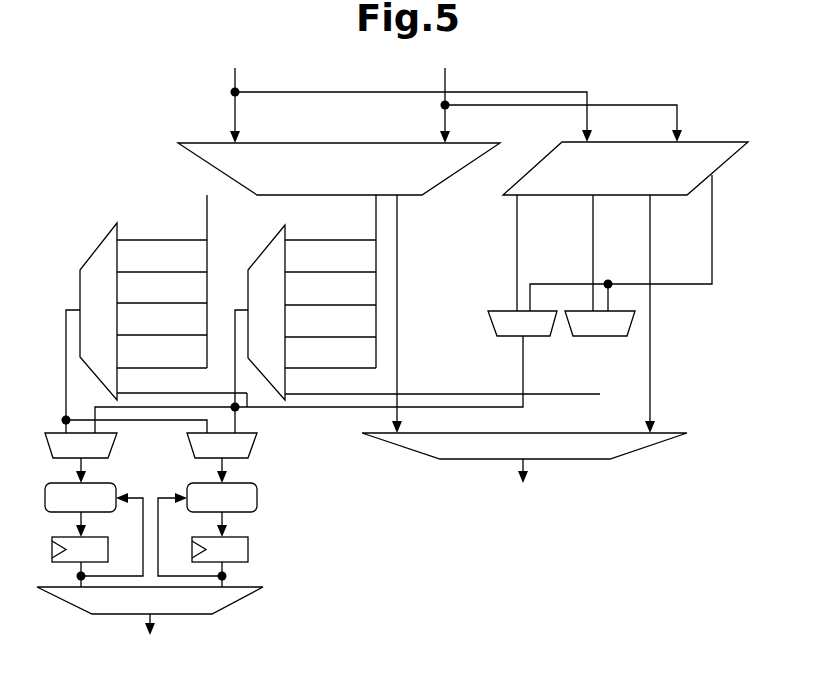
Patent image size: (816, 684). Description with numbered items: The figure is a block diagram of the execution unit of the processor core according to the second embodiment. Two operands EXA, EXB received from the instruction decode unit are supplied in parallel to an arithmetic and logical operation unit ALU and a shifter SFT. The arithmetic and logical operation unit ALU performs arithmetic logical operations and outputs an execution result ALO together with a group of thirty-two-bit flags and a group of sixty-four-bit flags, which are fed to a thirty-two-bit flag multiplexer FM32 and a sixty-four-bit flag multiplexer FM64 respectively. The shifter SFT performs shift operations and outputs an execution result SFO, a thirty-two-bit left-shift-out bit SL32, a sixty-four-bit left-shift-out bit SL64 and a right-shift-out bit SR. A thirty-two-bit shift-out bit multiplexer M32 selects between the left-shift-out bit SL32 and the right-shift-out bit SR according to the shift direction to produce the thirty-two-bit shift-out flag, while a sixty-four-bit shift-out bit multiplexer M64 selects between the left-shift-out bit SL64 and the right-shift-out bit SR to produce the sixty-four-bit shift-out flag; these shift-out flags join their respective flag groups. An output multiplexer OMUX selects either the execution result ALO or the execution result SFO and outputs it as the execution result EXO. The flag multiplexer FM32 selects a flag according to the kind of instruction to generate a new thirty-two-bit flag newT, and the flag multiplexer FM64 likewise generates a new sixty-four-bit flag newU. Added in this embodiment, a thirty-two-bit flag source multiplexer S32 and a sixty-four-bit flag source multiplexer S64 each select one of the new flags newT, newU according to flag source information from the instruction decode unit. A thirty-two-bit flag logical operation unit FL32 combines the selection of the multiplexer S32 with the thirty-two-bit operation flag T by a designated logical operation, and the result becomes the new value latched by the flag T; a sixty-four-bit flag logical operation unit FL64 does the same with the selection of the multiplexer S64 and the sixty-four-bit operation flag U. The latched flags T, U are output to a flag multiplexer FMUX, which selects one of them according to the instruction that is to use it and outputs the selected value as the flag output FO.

The operand for execution EXA is at (402, 94).
The operand for execution EXB is at (552, 94).
The arithmetic and logical operation unit ALU is at (339, 169).
The shifter SFT is at (625, 168).
The 64-bit flag multiplexer FM64 is at (163, 297).
The 32-bit flag multiplexer FM32 is at (424, 297).
The execution result ALO is at (419, 314).
The new 64-bit flag newU is at (123, 371).
The new 32-bit flag newT is at (229, 371).
The 64-bit flag source multiplexer S64 is at (81, 458).
The 32-bit flag source multiplexer S32 is at (222, 458).
The 64-bit flag logical operation unit FL64 is at (80, 510).
The 32-bit flag logical operation unit FL32 is at (222, 510).
The 64-bit operation flag U is at (97, 540).
The 32-bit operation flag T is at (203, 540).
The flag multiplexer FMUX is at (150, 600).
The flag output FO is at (150, 638).
The 64-bit left-shift-out bit SL64 is at (485, 253).
The 32-bit left-shift-out bit SL32 is at (579, 253).
The right-shift-out bit SR is at (621, 243).
The execution result SFO is at (672, 314).
The 64-bit shift-out bit multiplexer M64 is at (522, 324).
The 32-bit shift-out bit multiplexer M32 is at (600, 324).
The output multiplexer OMUX is at (524, 446).
The execution result EXO is at (523, 484).